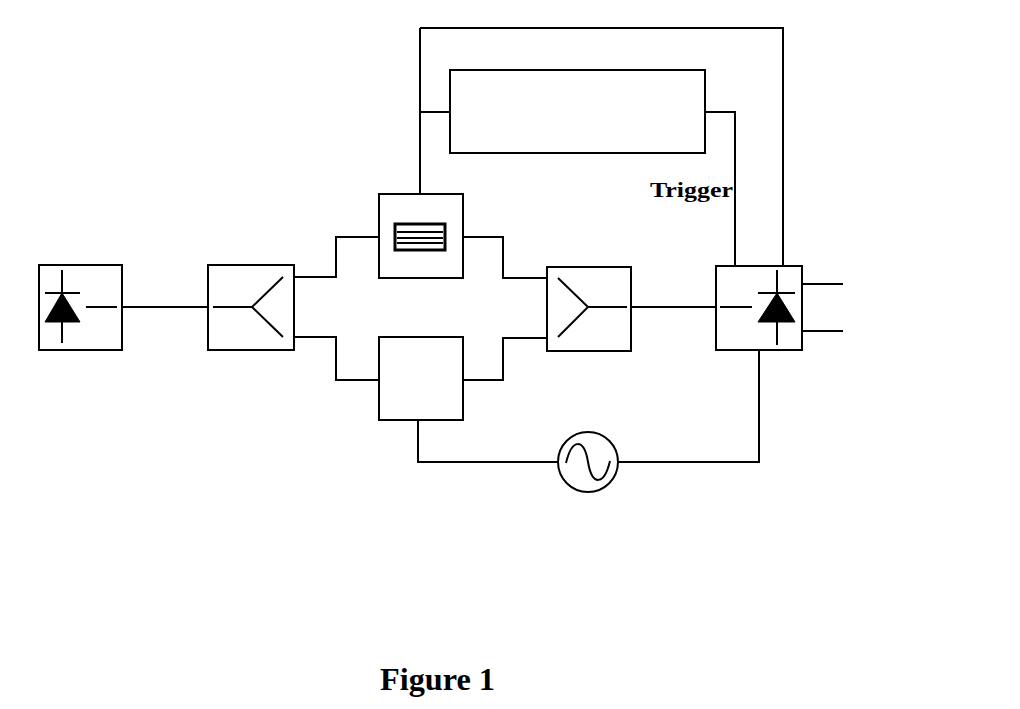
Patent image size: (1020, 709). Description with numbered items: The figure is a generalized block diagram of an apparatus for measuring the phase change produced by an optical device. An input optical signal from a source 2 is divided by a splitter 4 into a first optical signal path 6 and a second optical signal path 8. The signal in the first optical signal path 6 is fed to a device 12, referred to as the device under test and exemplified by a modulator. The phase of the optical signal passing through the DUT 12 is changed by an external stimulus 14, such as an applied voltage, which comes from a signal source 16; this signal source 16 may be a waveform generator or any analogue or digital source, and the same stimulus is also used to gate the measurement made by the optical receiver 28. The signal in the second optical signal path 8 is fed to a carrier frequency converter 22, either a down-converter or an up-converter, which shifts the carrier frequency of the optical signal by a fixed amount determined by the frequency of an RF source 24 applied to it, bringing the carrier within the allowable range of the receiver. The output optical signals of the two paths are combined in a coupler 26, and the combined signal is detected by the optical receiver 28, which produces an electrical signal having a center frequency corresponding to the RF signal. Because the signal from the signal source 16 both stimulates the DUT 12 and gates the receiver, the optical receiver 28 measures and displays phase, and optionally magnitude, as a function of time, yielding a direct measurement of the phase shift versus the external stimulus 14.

The source 2 is at (75, 272).
The splitter 4 is at (237, 272).
The first optical signal path 6 is at (353, 232).
The second optical signal path 8 is at (353, 380).
The device under test (DUT) 12 is at (463, 212).
The external stimulus 14 is at (420, 77).
The signal source 16 is at (697, 85).
The carrier frequency converter 22 is at (463, 412).
The RF source 24 is at (608, 440).
The coupler 26 is at (610, 264).
The optical receiver 28 is at (793, 265).